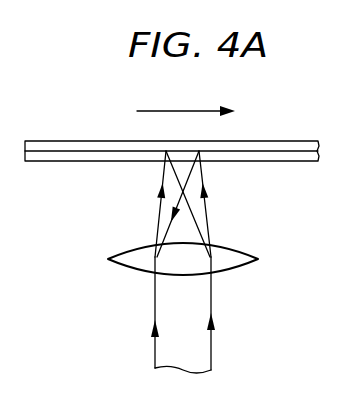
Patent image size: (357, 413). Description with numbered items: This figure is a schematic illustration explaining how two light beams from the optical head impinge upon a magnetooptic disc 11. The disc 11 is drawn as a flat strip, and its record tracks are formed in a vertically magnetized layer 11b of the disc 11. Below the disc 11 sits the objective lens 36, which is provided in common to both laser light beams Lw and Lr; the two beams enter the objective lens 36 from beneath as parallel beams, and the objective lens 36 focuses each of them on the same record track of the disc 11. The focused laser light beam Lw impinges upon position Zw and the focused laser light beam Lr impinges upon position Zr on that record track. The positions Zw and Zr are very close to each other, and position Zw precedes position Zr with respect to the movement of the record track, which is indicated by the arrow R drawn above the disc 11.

The magnetooptic disc 11 is at (73, 141).
The vertically magnetized layer 11b is at (53, 151).
The objective lens 36 is at (228, 262).
The arrow indicating movement of the record track R is at (186, 99).
The laser light beam Lw is at (165, 207).
The laser light beam Lr is at (200, 200).
The position upon which laser light beam Lw impinges Zw is at (164, 152).
The position upon which laser light beam Lr impinges Zr is at (200, 152).